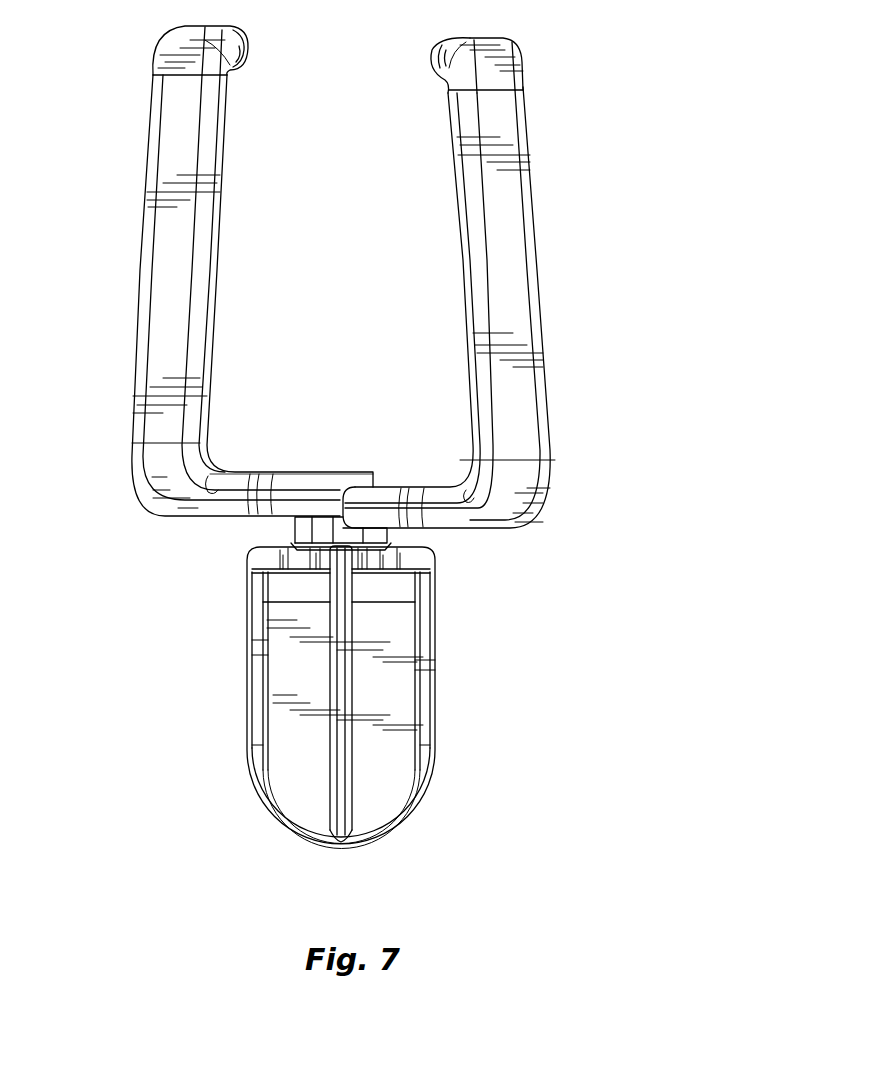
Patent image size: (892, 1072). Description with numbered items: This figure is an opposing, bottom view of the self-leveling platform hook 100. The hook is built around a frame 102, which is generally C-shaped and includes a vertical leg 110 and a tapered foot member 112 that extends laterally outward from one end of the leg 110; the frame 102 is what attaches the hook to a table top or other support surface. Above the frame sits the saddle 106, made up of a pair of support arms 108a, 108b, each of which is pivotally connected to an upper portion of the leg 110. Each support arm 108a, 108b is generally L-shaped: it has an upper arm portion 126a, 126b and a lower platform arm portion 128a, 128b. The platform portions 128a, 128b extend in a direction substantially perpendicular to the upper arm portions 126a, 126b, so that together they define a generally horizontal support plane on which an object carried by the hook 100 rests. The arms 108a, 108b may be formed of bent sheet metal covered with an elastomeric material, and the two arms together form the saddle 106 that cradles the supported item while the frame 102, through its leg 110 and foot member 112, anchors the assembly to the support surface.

The self-leveling platform hook 100 is at (378, 437).
The frame 102 is at (413, 697).
The saddle 106 is at (343, 277).
The support arm 108a is at (503, 310).
The support arm 108b is at (205, 230).
The vertical leg 110 is at (410, 560).
The foot member 112 is at (403, 708).
The upper arm portion 126a is at (448, 490).
The upper arm portion 126b is at (237, 477).
The lower platform arm portion 128a is at (513, 267).
The lower platform arm portion 128b is at (170, 290).